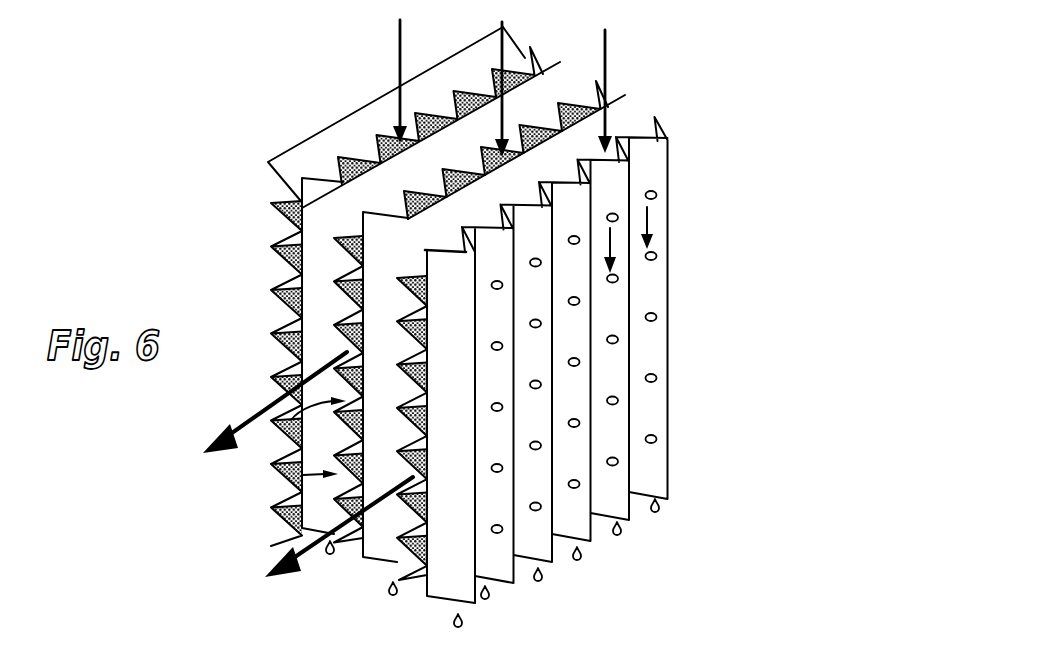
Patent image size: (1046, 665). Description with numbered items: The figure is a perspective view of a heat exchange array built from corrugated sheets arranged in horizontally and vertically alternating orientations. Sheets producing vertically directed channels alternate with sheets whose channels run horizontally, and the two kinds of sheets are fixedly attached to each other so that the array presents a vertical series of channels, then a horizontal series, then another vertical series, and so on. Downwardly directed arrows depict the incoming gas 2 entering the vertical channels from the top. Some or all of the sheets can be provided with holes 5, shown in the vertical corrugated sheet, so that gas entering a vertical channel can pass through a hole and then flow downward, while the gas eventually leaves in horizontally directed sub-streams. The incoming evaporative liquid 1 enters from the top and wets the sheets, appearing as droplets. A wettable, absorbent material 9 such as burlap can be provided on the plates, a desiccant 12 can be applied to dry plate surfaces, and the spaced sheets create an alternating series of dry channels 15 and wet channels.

The evaporative liquid 1 is at (578, 562).
The incoming gas 2 is at (604, 48).
The holes 5 is at (657, 440).
The absorbent material 9 is at (328, 506).
The desiccant 12 is at (412, 262).
The dry channel 15 is at (452, 143).